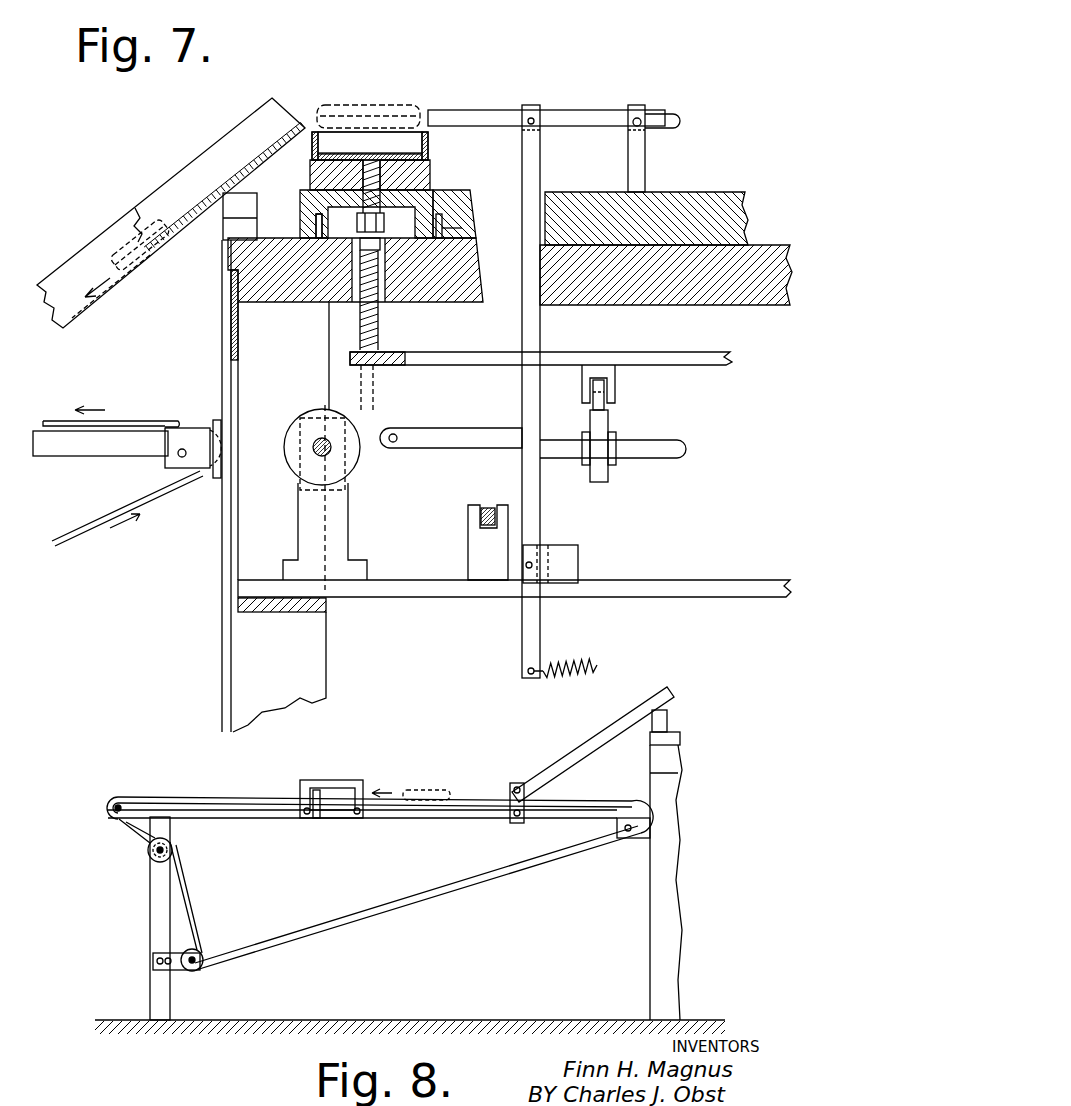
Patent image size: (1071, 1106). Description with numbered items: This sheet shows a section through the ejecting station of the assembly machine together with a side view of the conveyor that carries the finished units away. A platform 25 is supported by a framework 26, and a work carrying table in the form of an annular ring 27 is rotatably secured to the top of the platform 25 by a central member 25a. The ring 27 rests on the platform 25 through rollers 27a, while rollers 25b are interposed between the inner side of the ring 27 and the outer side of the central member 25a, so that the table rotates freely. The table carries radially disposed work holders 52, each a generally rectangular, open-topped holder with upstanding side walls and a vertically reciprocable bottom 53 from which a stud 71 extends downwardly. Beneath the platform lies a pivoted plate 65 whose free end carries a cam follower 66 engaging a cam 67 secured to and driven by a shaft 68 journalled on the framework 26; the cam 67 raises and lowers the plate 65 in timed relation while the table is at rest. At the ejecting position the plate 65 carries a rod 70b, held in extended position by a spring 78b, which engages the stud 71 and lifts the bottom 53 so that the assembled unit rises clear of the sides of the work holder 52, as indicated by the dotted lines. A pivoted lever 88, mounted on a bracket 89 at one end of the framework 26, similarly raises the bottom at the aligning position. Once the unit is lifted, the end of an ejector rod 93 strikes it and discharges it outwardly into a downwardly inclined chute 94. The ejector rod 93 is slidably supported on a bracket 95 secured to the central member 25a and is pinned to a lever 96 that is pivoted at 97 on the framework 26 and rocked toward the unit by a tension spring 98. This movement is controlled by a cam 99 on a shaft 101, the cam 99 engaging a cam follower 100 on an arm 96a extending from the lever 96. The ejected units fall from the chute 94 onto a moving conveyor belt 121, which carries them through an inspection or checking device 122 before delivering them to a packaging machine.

In FIG. 7, the platform 25 is at (683, 303).
In FIG. 7, the central member 25a is at (708, 200).
In FIG. 7, the rollers 25b is at (470, 230).
In FIG. 7, the framework 26 is at (316, 638).
In FIG. 7, the annular ring 27 is at (300, 208).
In FIG. 7, the rollers 27a is at (305, 233).
In FIG. 7, the work holders 52 is at (428, 145).
In FIG. 7, the vertically reciprocable bottom 53 is at (428, 160).
In FIG. 7, the plate 65 is at (435, 353).
In FIG. 7, the cam follower 66 is at (595, 390).
In FIG. 7, the cam 67 is at (596, 418).
In FIG. 7, the shaft 68 is at (659, 458).
In FIG. 7, the rod 70b is at (378, 316).
In FIG. 7, the studs 71 is at (384, 222).
In FIG. 7, the spring 78b is at (378, 334).
In FIG. 7, the pivoted lever 88 is at (480, 515).
In FIG. 7, the bracket 89 is at (478, 563).
In FIG. 7, the ejector rod 93 is at (486, 92).
In FIG. 7, the chute 94 is at (200, 163).
In FIG. 8, the chute 94 is at (568, 757).
In FIG. 7, the bracket 95 is at (628, 170).
In FIG. 7, the lever 96 is at (522, 408).
In FIG. 7, the arm 96a is at (462, 447).
In FIG. 7, the pivot 97 is at (531, 565).
In FIG. 7, the tension spring 98 is at (592, 662).
In FIG. 7, the cam 99 is at (355, 490).
In FIG. 7, the cam follower 100 is at (395, 449).
In FIG. 7, the shaft 101 is at (318, 440).
In FIG. 7, the conveyor belt 121 is at (150, 420).
In FIG. 8, the conveyor belt 121 is at (190, 800).
In FIG. 8, the inspection or checking device 122 is at (321, 780).